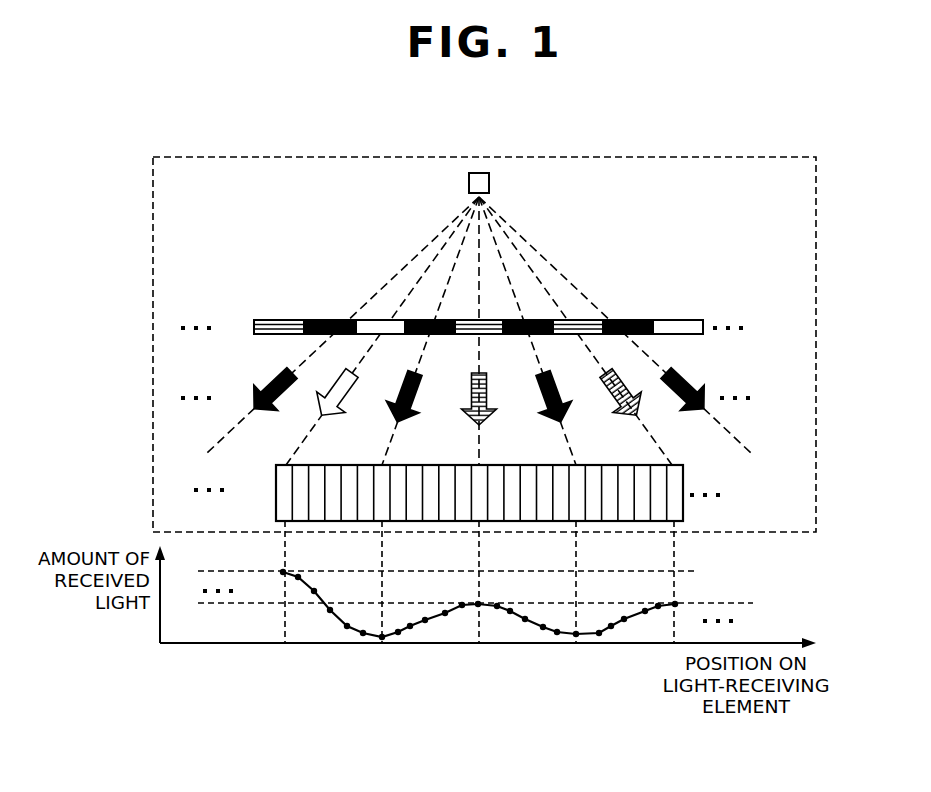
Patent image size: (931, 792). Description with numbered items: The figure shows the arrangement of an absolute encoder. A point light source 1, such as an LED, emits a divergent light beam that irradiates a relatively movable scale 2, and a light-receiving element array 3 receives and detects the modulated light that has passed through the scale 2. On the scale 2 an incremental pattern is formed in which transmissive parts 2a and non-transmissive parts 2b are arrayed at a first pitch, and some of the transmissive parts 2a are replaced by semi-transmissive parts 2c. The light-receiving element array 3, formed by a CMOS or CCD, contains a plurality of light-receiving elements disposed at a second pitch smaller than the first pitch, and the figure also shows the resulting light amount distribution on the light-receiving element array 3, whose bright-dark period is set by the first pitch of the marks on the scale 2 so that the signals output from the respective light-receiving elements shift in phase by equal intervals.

The point light source 1 is at (489, 183).
The scale 2 is at (471, 298).
The transmissive parts 2a is at (367, 320).
The non-transmissive parts 2b is at (316, 320).
The semi-transmissive parts 2c is at (268, 320).
The light-receiving element array 3 is at (683, 467).